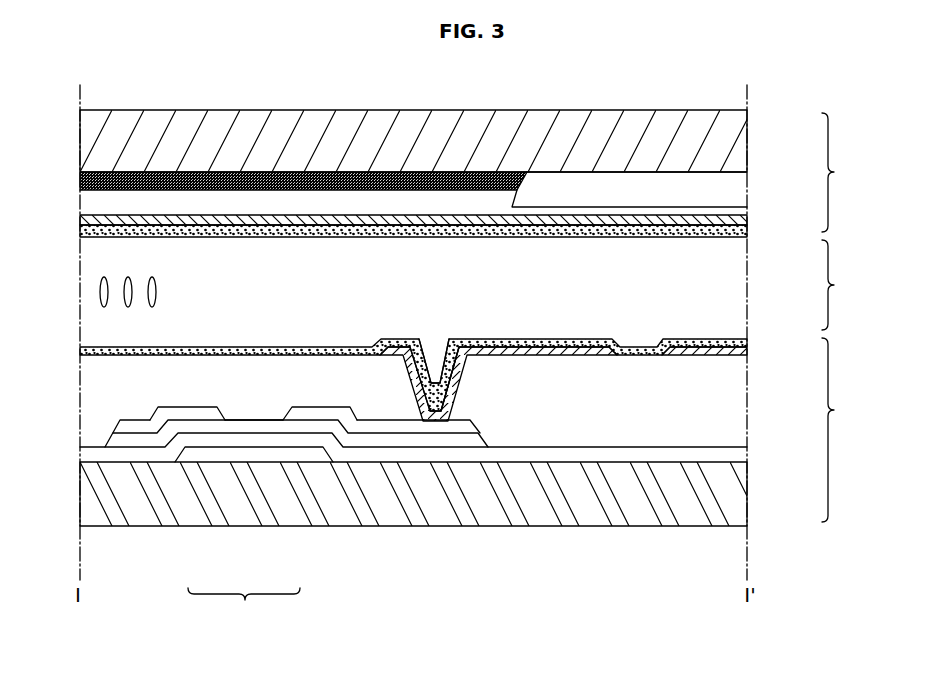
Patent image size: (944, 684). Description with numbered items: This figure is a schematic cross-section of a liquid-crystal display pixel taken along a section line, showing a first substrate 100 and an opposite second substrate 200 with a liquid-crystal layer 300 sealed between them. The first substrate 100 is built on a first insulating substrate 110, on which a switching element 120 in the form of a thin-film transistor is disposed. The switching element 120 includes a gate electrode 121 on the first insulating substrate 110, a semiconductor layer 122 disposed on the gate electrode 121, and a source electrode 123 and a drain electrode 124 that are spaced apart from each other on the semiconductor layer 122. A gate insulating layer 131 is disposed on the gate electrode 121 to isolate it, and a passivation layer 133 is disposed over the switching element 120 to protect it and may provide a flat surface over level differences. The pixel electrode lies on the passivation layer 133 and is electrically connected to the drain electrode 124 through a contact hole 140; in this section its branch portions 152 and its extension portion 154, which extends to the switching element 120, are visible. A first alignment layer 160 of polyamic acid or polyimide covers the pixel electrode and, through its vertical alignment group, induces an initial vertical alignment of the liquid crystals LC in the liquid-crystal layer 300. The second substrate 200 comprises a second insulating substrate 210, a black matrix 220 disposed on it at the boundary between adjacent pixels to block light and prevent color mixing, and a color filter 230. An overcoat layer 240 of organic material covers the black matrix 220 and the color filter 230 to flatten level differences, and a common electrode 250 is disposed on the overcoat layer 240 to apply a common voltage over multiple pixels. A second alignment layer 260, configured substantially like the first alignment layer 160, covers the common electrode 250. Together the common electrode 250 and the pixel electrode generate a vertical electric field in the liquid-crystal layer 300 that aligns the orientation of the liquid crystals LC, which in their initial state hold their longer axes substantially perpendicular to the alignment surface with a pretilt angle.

The first substrate 100 is at (845, 430).
The first insulating substrate 110 is at (743, 512).
The switching element 120 is at (244, 609).
The gate electrode 121 is at (275, 455).
The semiconductor layer 122 is at (235, 427).
The source electrode 123 is at (197, 410).
The drain electrode 124 is at (315, 410).
The gate insulating layer 131 is at (743, 455).
The passivation layer 133 is at (737, 420).
The contact hole 140 is at (434, 332).
The branch portions 152 is at (700, 353).
The extension portion 154 is at (475, 350).
The first alignment layer 160 is at (743, 342).
The second substrate 200 is at (845, 172).
The second insulating substrate 210 is at (745, 128).
The black matrix 220 is at (80, 185).
The color filter 230 is at (747, 190).
The overcoat layer 240 is at (747, 207).
The common electrode 250 is at (747, 221).
The second alignment layer 260 is at (747, 232).
The liquid-crystal layer 300 is at (845, 285).
The liquid crystals LC is at (100, 290).